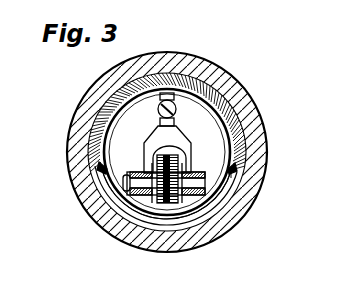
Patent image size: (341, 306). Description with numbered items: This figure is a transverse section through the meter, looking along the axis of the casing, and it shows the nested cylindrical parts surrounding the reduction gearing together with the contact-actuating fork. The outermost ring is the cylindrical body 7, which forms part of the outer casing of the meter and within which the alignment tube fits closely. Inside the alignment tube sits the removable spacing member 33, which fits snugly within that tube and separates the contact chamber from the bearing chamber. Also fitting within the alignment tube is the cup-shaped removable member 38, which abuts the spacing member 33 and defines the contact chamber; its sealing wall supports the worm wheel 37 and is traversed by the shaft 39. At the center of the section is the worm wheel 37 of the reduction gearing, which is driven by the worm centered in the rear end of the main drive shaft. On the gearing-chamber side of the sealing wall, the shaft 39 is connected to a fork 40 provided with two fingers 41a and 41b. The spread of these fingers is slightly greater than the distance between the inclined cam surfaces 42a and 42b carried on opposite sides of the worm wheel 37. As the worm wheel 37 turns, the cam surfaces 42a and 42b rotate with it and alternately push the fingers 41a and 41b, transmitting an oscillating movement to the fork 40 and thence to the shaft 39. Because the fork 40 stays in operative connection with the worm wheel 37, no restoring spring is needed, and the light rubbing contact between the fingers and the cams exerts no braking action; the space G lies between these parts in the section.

The cylindrical body 7 is at (262, 149).
The cup-shaped removable member 38 is at (118, 128).
The removable spacing member 33 is at (238, 133).
The shaft 39 is at (174, 96).
The fork 40 is at (178, 143).
The worm wheel 37 is at (163, 218).
The gap G is at (230, 186).
The finger 41a is at (118, 200).
The finger 41b is at (205, 218).
The inclined cam surface 42a is at (135, 204).
The inclined cam surface 42b is at (172, 218).